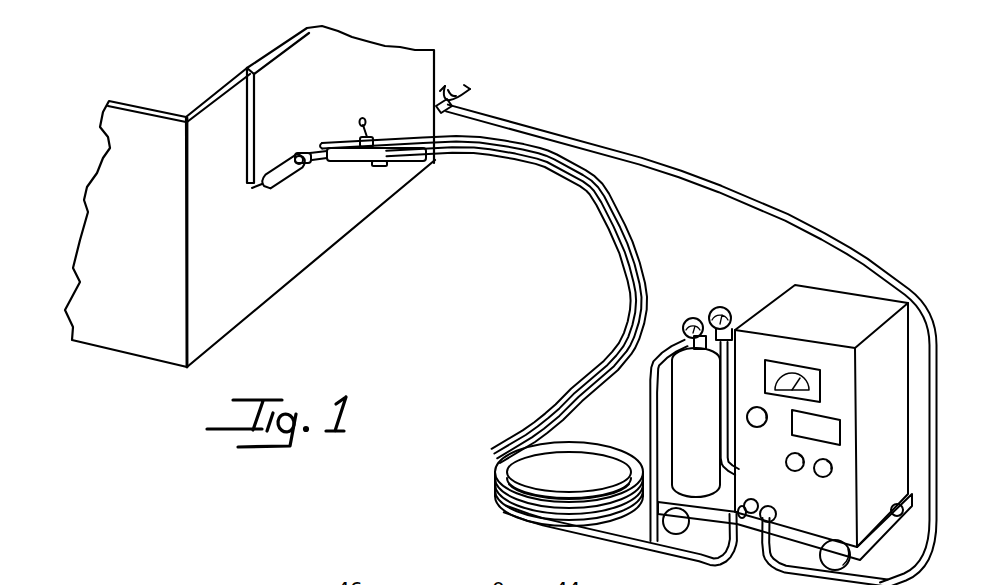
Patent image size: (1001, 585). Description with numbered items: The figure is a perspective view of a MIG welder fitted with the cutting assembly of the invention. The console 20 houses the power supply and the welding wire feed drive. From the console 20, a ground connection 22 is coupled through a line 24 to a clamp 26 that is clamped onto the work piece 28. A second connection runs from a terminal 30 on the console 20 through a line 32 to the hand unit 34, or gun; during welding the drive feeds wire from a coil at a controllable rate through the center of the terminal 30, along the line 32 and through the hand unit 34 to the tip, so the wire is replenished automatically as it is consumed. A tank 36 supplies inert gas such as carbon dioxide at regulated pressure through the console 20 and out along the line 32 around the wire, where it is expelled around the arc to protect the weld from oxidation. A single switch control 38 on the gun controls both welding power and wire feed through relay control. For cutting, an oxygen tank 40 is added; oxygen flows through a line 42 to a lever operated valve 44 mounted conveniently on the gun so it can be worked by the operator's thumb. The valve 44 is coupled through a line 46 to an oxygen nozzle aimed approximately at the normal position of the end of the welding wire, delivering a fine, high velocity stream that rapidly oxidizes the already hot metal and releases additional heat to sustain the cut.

The console 20 is at (822, 303).
The ground connection 22 is at (772, 508).
The line 24 is at (719, 190).
The clamp 26 is at (452, 106).
The work piece 28 is at (373, 66).
The terminal 30 is at (745, 500).
The line 32 is at (640, 263).
The hand unit 34 is at (413, 153).
The tank 36 is at (727, 322).
The switch control 38 is at (380, 165).
The oxygen tank 40 is at (682, 370).
The line 42 is at (535, 155).
The lever operated valve 44 is at (370, 137).
The line 46 is at (323, 145).